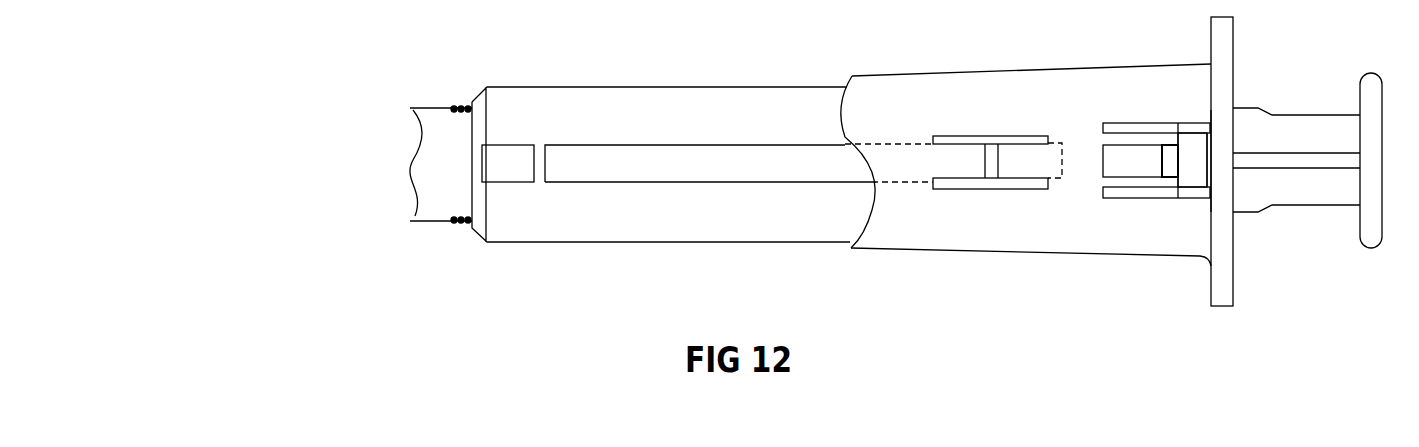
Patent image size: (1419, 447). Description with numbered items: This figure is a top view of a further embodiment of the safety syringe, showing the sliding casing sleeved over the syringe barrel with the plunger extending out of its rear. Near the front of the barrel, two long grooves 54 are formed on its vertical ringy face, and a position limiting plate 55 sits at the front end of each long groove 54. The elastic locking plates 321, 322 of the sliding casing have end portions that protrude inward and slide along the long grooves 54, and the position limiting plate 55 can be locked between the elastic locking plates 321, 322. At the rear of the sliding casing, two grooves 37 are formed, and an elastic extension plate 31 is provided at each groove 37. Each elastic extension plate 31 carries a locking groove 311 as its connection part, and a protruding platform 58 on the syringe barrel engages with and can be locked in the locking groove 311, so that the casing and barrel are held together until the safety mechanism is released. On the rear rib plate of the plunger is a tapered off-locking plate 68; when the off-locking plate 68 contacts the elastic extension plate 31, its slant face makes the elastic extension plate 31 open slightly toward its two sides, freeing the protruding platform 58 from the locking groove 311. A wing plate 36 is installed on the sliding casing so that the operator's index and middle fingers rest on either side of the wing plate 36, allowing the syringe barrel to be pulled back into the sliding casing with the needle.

The long groove 54 is at (590, 163).
The position limiting plate 55 is at (540, 170).
The elastic locking plate 321 is at (962, 163).
The elastic locking plate 322 is at (1025, 160).
The locking groove 311 is at (1103, 125).
The protruding platform 58 is at (1168, 160).
The elastic extension plate 31 is at (1188, 152).
The off-locking plate 68 is at (1210, 127).
The groove 37 is at (1132, 192).
The wing plate 36 is at (1223, 278).